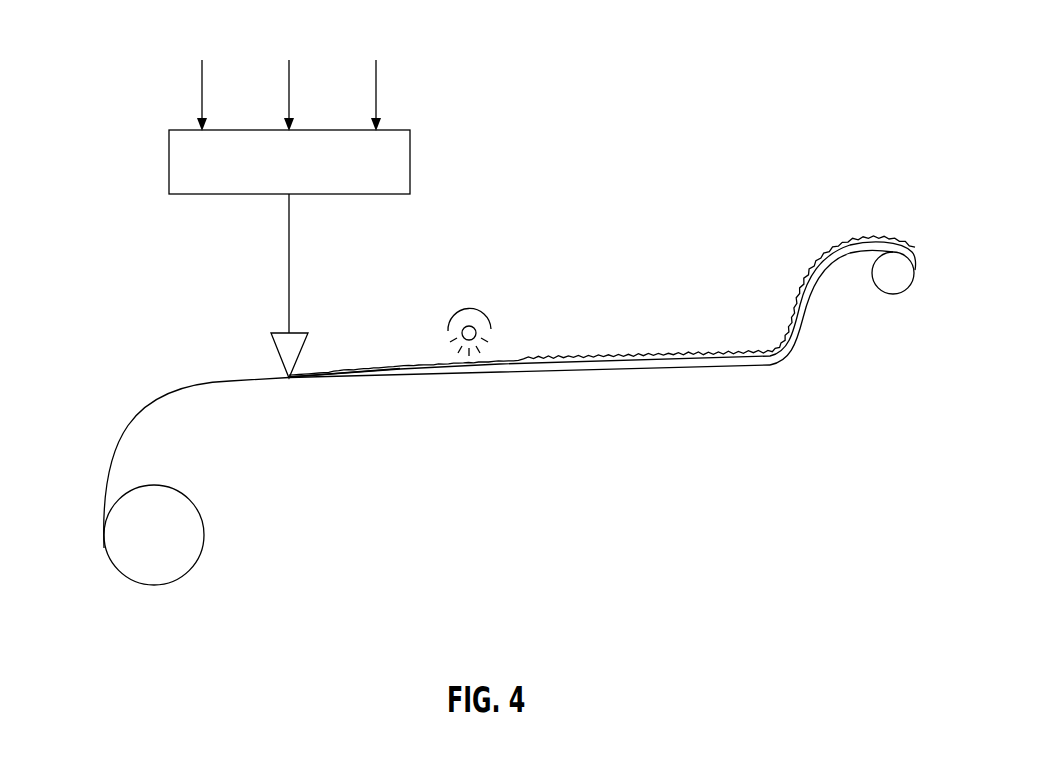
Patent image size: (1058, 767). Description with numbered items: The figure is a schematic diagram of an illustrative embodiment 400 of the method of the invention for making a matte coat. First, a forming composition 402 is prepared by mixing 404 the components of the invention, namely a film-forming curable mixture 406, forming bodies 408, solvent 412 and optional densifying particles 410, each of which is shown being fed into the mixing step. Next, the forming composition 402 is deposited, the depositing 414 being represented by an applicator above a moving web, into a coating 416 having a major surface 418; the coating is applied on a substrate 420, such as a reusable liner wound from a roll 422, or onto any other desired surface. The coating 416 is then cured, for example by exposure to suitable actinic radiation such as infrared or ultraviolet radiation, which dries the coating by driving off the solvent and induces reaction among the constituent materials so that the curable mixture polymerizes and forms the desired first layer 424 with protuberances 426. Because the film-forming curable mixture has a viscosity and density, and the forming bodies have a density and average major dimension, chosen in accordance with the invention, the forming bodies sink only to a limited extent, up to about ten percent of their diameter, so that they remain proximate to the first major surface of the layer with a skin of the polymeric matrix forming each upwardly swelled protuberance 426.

The illustrative embodiment of the method 400 is at (871, 65).
The forming composition 402 is at (291, 258).
The mixing 404 is at (414, 162).
The film-forming curable mixture 406 is at (201, 94).
The forming bodies 408 is at (375, 94).
The densifying particles 410 is at (288, 94).
The solvent 412 is at (140, 50).
The depositing 414 is at (296, 332).
The coating 416 is at (368, 379).
The major surface 418 is at (410, 366).
The substrate 420 is at (230, 384).
The supply roll 422 is at (154, 587).
The first layer 424 is at (576, 372).
The protuberances 426 is at (622, 355).